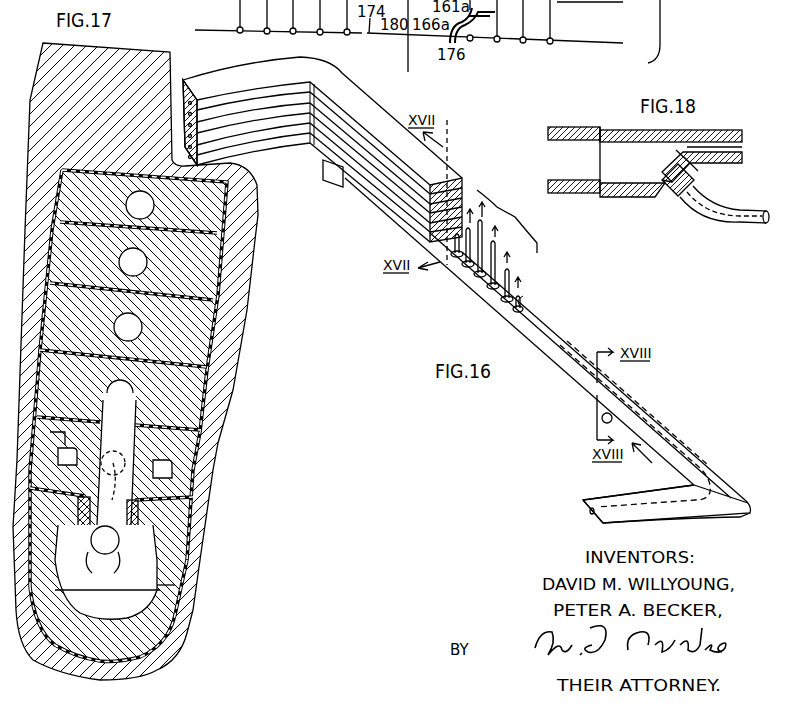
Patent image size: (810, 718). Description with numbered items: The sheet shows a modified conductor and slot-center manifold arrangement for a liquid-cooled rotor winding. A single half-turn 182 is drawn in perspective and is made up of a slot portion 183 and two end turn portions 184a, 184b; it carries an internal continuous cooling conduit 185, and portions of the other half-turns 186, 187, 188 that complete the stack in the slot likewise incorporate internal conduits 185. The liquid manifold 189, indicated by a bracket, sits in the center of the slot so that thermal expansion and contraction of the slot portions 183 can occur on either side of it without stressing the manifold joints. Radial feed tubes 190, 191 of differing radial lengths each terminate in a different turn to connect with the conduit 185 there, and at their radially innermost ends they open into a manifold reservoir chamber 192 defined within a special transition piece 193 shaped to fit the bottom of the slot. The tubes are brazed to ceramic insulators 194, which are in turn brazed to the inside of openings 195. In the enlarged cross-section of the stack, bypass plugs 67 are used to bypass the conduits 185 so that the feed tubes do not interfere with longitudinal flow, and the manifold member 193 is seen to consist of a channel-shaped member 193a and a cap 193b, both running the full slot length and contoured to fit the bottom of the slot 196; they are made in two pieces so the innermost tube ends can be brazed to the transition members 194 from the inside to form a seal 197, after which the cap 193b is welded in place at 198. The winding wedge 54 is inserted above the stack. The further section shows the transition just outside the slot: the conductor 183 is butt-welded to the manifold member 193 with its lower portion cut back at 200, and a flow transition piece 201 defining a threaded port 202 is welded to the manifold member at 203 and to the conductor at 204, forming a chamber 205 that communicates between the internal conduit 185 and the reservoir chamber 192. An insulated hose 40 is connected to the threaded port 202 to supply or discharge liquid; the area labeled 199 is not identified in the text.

In FIG. 17, the winding wedge 54 is at (167, 60).
In FIG. 17, the internal continuous cooling conduit 185 is at (140, 327).
In FIG. 16, the internal continuous cooling conduit 185 is at (462, 192).
In FIG. 18, the internal continuous cooling conduit 185 is at (733, 150).
In FIG. 17, the half-turn portion 188 is at (197, 347).
In FIG. 16, the half-turn portion 188 is at (407, 198).
In FIG. 17, the half-turn portion 187 is at (190, 400).
In FIG. 16, the half-turn portion 187 is at (393, 200).
In FIG. 17, the half-turn portion 186 is at (182, 470).
In FIG. 16, the half-turn portion 186 is at (380, 193).
In FIG. 17, the bypass plug 67 is at (180, 438).
In FIG. 17, the opening 195 is at (78, 500).
In FIG. 16, the opening 195 is at (520, 312).
In FIG. 17, the channel-shaped member 193a is at (170, 532).
In FIG. 17, the ceramic insulator 194 is at (140, 548).
In FIG. 16, the ceramic insulator 194 is at (526, 310).
In FIG. 17, the radial feed tube 190 is at (94, 566).
In FIG. 16, the radial feed tube 190 is at (458, 263).
In FIG. 16, the radial feed tube 191 is at (477, 273).
In FIG. 17, the brazed seal 197 is at (113, 566).
In FIG. 17, the manifold reservoir chamber 192 is at (118, 610).
In FIG. 16, the manifold reservoir chamber 192 is at (552, 367).
In FIG. 18, the manifold reservoir chamber 192 is at (581, 163).
In FIG. 17, the cap weld 198 is at (173, 597).
In FIG. 17, the cap 193b is at (143, 627).
In FIG. 17, the slot bottom 196 is at (145, 655).
In FIG. 17, the transition piece / manifold member 193 is at (33, 638).
In FIG. 16, the transition piece / manifold member 193 is at (492, 317).
In FIG. 18, the transition piece / manifold member 193 is at (563, 195).
In FIG. 16, the end turn portion 184b is at (275, 150).
In FIG. 16, the end turn portion 184a is at (697, 520).
In FIG. 16, the half-turn 182 is at (698, 393).
In FIG. 16, the slot portion / conductor 183 is at (577, 345).
In FIG. 18, the slot portion / conductor 183 is at (720, 130).
In FIG. 16, the liquid manifold 189 is at (511, 221).
In FIG. 18, the weld to manifold member 203 is at (603, 128).
In FIG. 18, the chamber 205 is at (631, 161).
In FIG. 18, the cut-back portion 200 is at (688, 158).
In FIG. 18, the threaded port 202 is at (660, 168).
In FIG. 18, the weld to conductor 204 is at (712, 167).
In FIG. 18, the flow transition piece 201 is at (627, 197).
In FIG. 18, the fitting 199 is at (686, 235).
In FIG. 18, the insulated hose 40 is at (750, 208).